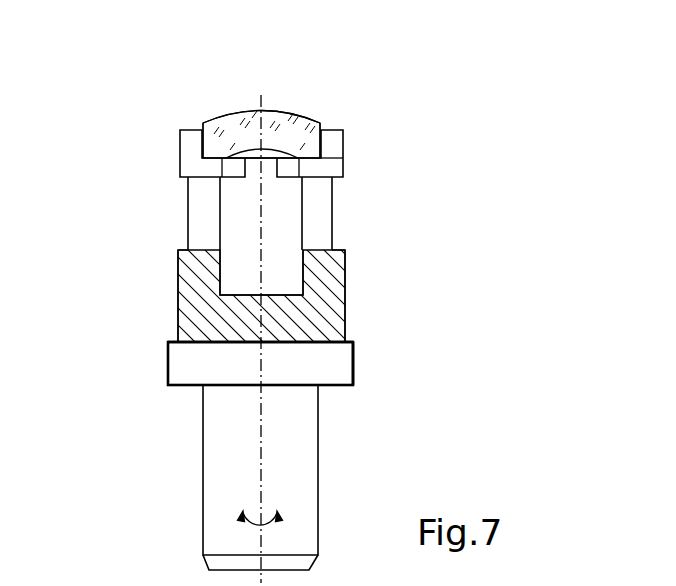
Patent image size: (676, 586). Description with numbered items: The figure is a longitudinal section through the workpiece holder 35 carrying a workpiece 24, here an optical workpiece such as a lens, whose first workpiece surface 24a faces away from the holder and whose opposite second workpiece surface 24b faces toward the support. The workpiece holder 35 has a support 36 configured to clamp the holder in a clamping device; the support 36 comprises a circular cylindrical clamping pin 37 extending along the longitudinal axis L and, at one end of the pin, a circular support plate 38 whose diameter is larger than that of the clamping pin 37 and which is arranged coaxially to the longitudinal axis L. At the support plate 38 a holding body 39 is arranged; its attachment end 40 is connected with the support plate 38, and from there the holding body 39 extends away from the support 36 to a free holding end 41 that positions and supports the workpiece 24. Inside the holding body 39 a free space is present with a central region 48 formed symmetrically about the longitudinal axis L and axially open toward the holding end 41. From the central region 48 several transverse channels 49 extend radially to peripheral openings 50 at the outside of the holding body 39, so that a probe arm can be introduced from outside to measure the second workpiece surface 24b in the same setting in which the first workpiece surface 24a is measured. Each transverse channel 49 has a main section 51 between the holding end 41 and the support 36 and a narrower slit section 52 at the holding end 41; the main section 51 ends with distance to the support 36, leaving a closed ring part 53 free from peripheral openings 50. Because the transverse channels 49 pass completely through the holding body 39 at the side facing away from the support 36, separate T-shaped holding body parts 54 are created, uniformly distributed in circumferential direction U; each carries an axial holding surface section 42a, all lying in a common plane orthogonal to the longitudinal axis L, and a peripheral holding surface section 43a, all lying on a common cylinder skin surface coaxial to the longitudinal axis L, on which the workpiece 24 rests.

The workpiece 24 is at (279, 110).
The first workpiece surface 24a is at (247, 102).
The second workpiece surface 24b is at (268, 163).
The workpiece holder 35 is at (445, 176).
The support 36 is at (382, 360).
The clamping pin 37 is at (308, 436).
The support plate 38 is at (168, 362).
The holding body 39 is at (382, 300).
The attachment end 40 is at (345, 342).
The holding end 41 is at (173, 137).
The axial holding surface section 42a is at (214, 145).
The peripheral holding surface section 43a is at (204, 124).
The central region 48 is at (290, 222).
The transverse channel 49 is at (172, 207).
The peripheral opening 50 is at (187, 238).
The main section 51 is at (198, 186).
The slit section 52 is at (328, 163).
The ring part 53 is at (203, 330).
The holding body part 54 is at (178, 262).
The longitudinal axis L is at (262, 475).
The circumferential direction U is at (242, 541).